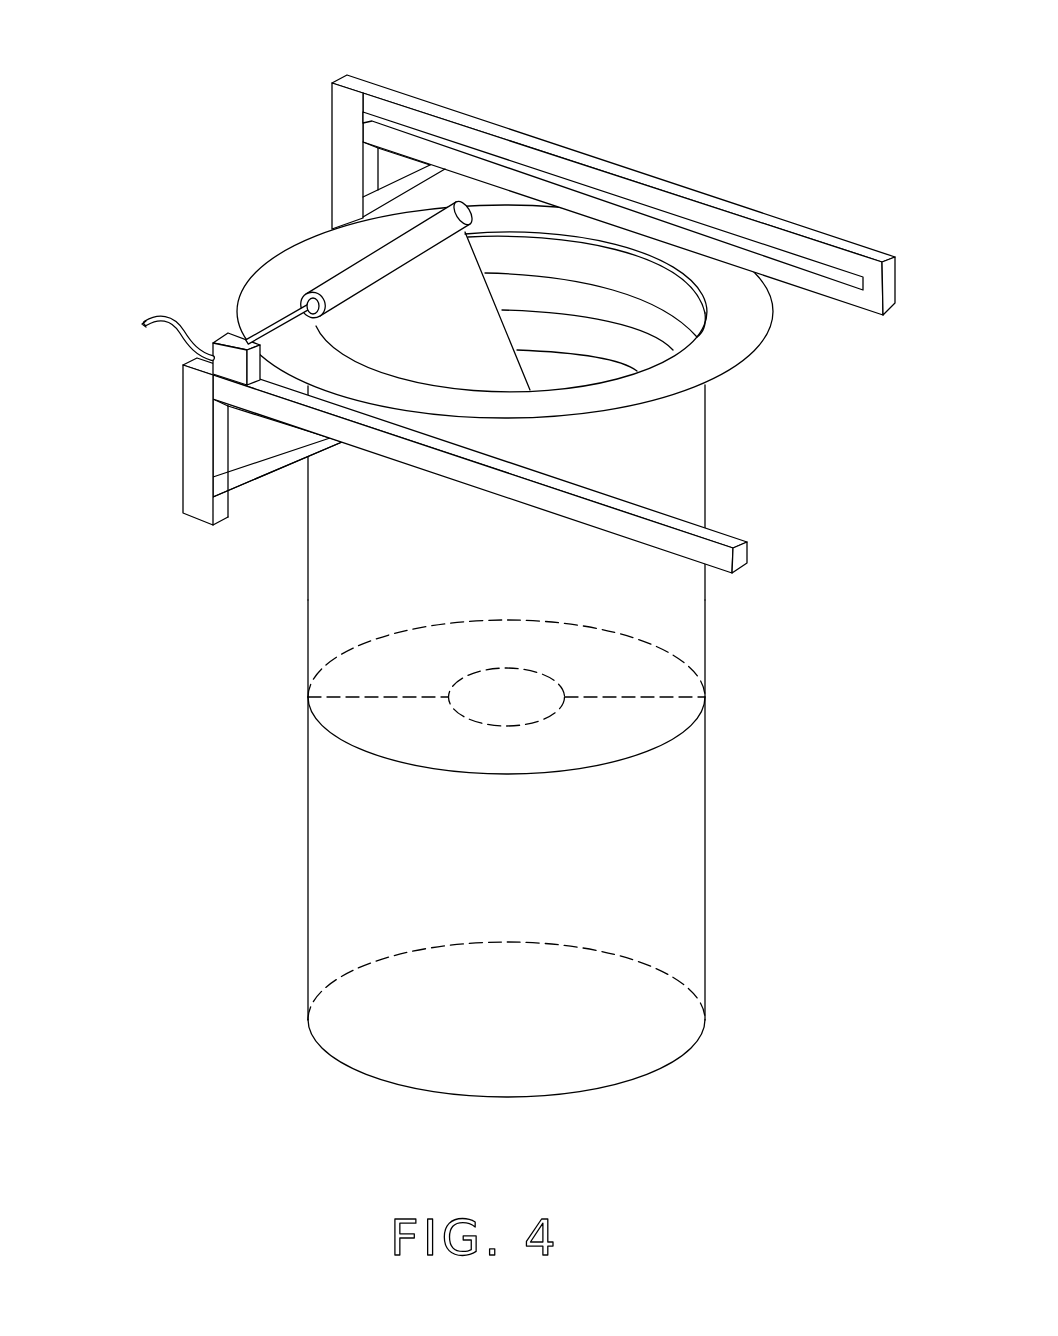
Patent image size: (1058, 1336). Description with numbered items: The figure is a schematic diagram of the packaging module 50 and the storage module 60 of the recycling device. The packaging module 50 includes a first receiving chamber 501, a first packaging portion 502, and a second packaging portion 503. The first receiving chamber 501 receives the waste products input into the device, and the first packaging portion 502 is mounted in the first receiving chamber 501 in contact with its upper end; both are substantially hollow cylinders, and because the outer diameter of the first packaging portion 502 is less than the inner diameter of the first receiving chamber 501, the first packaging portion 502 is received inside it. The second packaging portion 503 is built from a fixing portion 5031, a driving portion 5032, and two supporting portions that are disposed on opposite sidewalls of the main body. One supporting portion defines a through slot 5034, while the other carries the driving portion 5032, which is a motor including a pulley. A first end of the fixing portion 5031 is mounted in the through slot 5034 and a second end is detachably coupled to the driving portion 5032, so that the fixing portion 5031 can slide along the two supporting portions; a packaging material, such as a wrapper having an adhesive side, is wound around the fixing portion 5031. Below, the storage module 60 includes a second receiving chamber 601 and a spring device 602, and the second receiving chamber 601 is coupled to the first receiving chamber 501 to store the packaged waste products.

The packaging module 50 is at (471, 306).
The first receiving chamber 501 is at (673, 452).
The first packaging portion 502 is at (312, 252).
The second packaging portion 503 is at (471, 324).
The fixing portion 5031 is at (277, 325).
The driving portion 5032 is at (227, 362).
The through slot 5034 is at (808, 274).
The storage module 60 is at (572, 848).
The second receiving chamber 601 is at (680, 857).
The spring device 602 is at (652, 677).